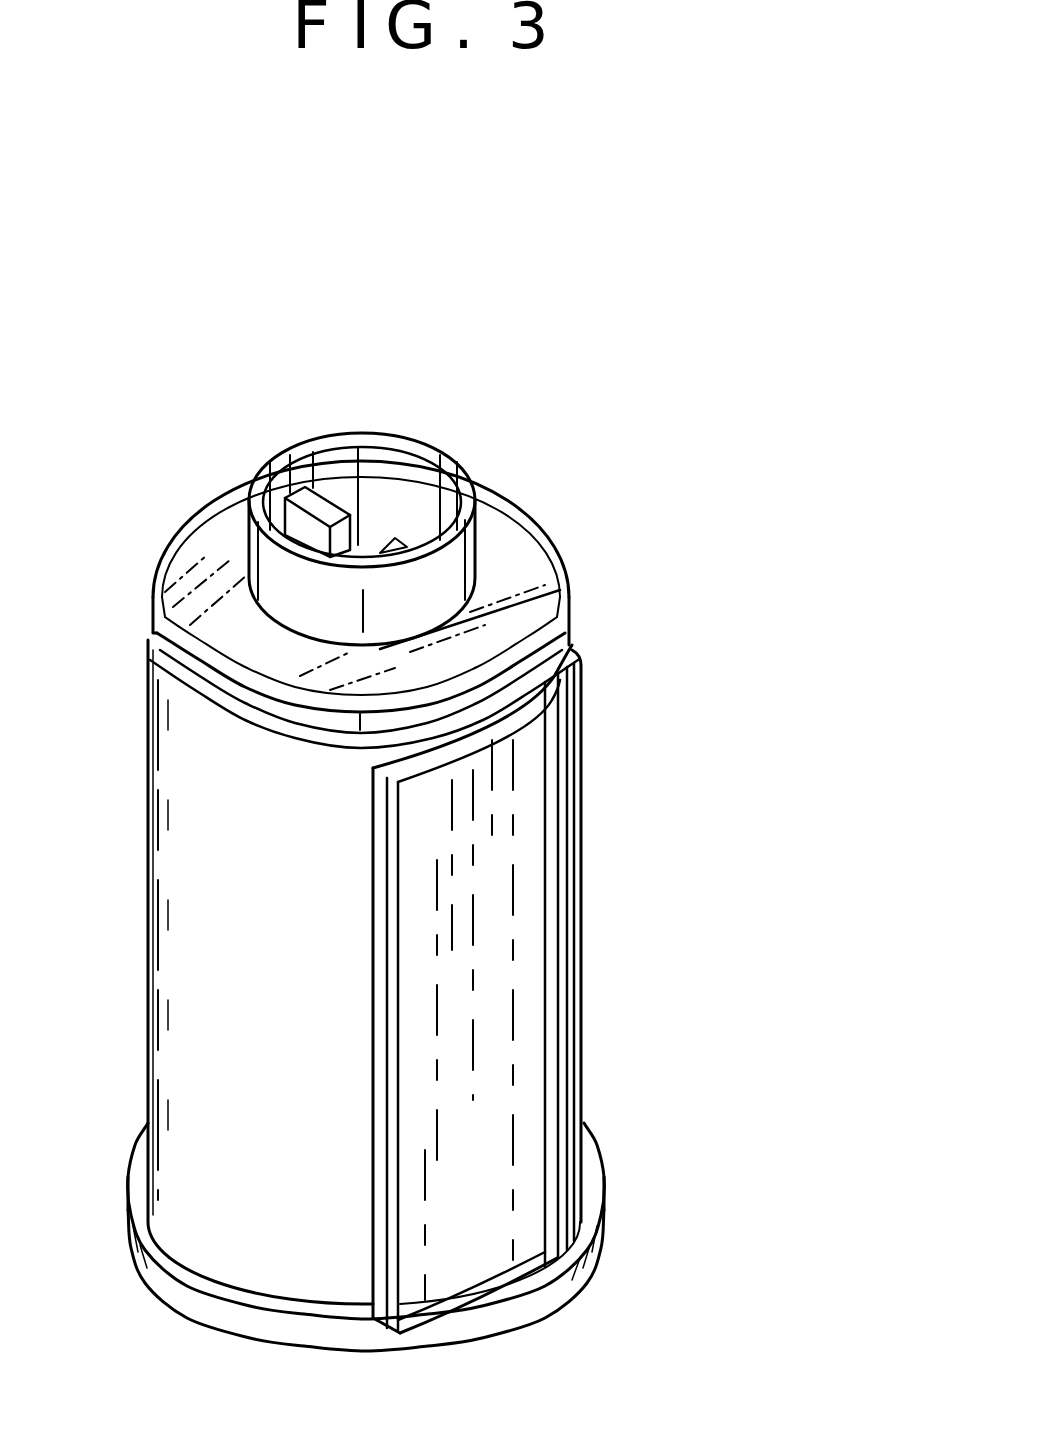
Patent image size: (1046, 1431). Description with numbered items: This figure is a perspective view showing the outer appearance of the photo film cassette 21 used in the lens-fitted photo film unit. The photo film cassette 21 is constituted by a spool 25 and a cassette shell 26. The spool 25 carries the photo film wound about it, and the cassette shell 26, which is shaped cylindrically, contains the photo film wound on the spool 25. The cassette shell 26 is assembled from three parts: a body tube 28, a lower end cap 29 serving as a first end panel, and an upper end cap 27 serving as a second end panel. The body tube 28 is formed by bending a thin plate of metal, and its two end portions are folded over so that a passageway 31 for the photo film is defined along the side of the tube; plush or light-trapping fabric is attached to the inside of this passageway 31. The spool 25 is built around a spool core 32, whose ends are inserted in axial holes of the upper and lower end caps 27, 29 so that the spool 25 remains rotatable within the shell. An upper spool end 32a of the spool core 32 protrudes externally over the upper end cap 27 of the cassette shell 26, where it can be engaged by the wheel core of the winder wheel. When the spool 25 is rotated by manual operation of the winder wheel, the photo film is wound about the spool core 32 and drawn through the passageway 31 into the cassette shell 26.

The photo film cassette 21 is at (520, 373).
The spool 25 is at (279, 420).
The cassette shell 26 is at (750, 775).
The upper end cap 27 is at (573, 617).
The body tube 28 is at (570, 903).
The lower end cap 29 is at (600, 1195).
The passageway 31 is at (387, 1068).
The spool core 32 is at (445, 467).
The upper spool end 32a is at (374, 464).